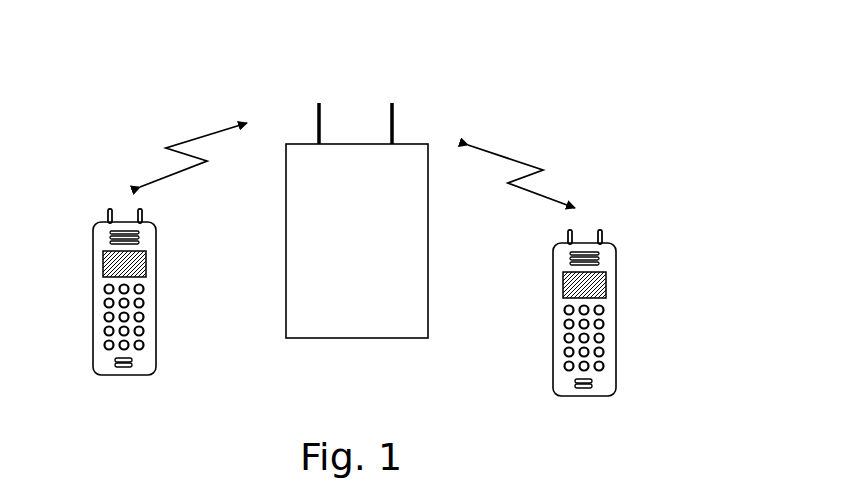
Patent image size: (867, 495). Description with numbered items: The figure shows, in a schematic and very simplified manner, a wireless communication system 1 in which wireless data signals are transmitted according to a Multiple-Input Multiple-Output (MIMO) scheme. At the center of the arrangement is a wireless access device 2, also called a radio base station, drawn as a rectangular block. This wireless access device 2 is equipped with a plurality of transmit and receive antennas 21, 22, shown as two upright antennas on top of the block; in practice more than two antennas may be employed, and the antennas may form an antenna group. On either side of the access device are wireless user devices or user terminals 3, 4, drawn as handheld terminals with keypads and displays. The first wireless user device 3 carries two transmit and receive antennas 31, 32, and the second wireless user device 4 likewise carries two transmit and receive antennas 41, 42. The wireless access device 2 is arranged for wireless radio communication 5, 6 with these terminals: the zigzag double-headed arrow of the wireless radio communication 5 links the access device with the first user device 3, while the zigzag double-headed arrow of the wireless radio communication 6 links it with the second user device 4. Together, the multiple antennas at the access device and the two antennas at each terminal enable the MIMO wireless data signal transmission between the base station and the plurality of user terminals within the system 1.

The wireless communication system 1 is at (246, 376).
The wireless access device 2 is at (410, 277).
The transmit and receive antenna 21 is at (317, 103).
The transmit and receive antenna 22 is at (390, 103).
The wireless user device 3 is at (147, 312).
The transmit and receive antenna 31 is at (108, 213).
The transmit and receive antenna 32 is at (143, 213).
The wireless user device 4 is at (606, 322).
The transmit and receive antenna 41 is at (604, 235).
The transmit and receive antenna 42 is at (570, 235).
The wireless radio communication 5 is at (183, 140).
The wireless radio communication 6 is at (510, 158).